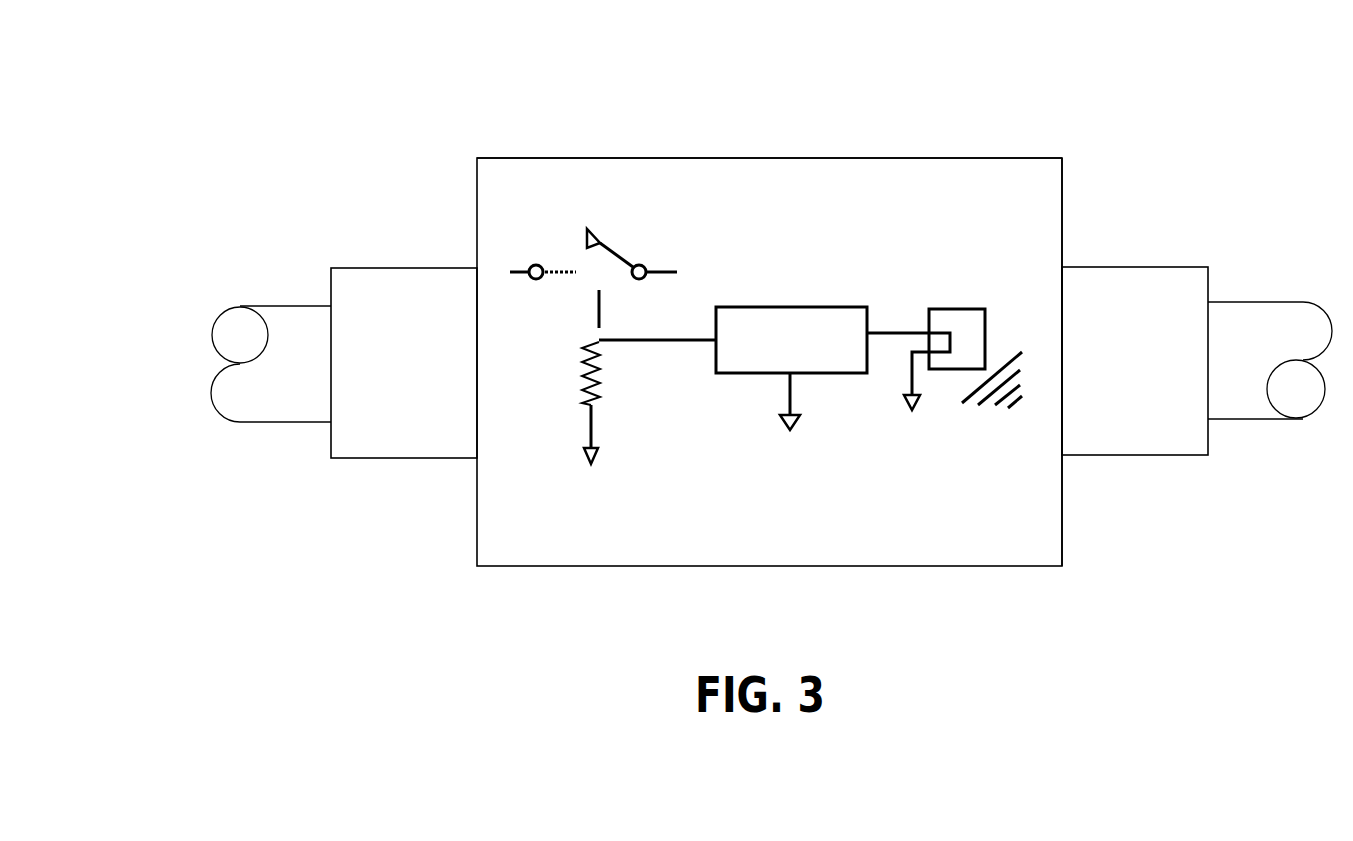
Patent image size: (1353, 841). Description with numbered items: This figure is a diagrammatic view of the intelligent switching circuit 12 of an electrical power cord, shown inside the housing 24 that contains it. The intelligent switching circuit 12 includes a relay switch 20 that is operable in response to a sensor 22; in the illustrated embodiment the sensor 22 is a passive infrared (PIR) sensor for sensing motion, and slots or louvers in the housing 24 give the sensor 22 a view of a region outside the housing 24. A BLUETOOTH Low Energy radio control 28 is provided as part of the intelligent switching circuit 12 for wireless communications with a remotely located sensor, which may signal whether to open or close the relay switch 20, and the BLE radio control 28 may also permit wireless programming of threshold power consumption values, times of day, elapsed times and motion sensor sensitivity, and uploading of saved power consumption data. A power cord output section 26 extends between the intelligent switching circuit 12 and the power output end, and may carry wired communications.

The intelligent switching circuit 12 is at (842, 200).
The relay switch 20 is at (522, 341).
The sensor 22 is at (992, 462).
The housing 24 is at (550, 157).
The power cord output section 26 is at (1266, 315).
The BLE radio control 28 is at (700, 425).